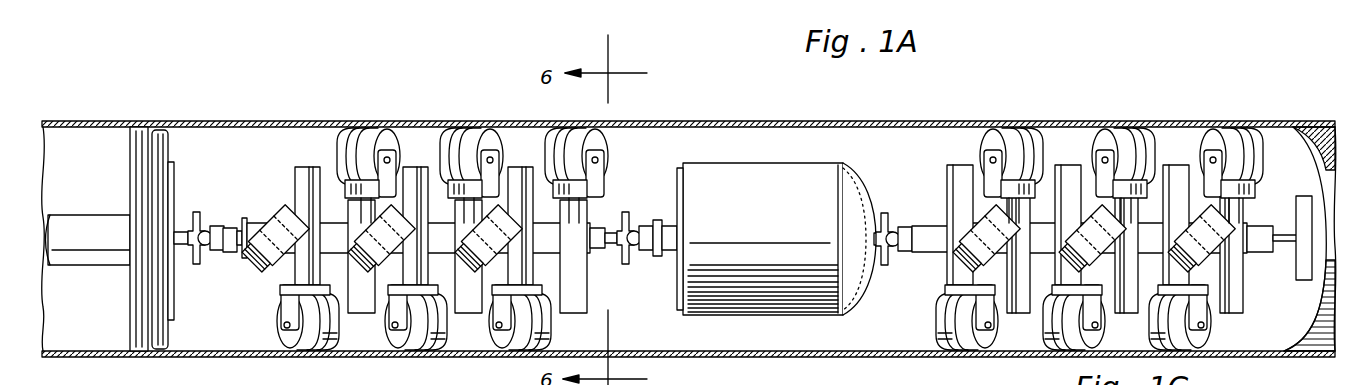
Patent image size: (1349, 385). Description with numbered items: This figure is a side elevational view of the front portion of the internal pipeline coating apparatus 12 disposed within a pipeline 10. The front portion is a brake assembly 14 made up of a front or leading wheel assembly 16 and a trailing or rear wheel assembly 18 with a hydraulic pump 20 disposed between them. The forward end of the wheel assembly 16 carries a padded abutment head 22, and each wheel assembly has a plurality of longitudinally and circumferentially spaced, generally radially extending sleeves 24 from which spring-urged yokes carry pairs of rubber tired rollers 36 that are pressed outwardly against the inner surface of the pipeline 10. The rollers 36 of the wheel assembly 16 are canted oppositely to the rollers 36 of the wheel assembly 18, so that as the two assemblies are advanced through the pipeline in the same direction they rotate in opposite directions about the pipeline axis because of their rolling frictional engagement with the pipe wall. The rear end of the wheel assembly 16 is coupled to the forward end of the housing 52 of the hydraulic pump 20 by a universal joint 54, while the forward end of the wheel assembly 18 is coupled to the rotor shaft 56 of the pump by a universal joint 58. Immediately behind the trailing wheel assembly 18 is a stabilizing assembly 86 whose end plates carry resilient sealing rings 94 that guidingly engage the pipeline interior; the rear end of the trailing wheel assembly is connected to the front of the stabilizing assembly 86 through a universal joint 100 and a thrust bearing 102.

The pipeline 10 is at (937, 118).
The internal pipeline coating apparatus 12 is at (699, 150).
The brake assembly 14 is at (822, 148).
The front or leading wheel assembly 16 is at (1017, 333).
The trailing or rear wheel assembly 18 is at (368, 335).
The hydraulic pump 20 is at (823, 326).
The padded abutment head 22 is at (1303, 268).
The sleeves 24 is at (1228, 305).
The rubber tired wheels or rollers 36 is at (1137, 137).
The housing 52 is at (856, 198).
The universal joint 54 is at (893, 264).
The rotor shaft 56 is at (646, 258).
The universal joint 58 is at (626, 216).
The stabilizing assembly 86 is at (74, 206).
The sealing rings 94 is at (165, 329).
The universal joint 100 is at (218, 216).
The thrust bearing 102 is at (183, 226).